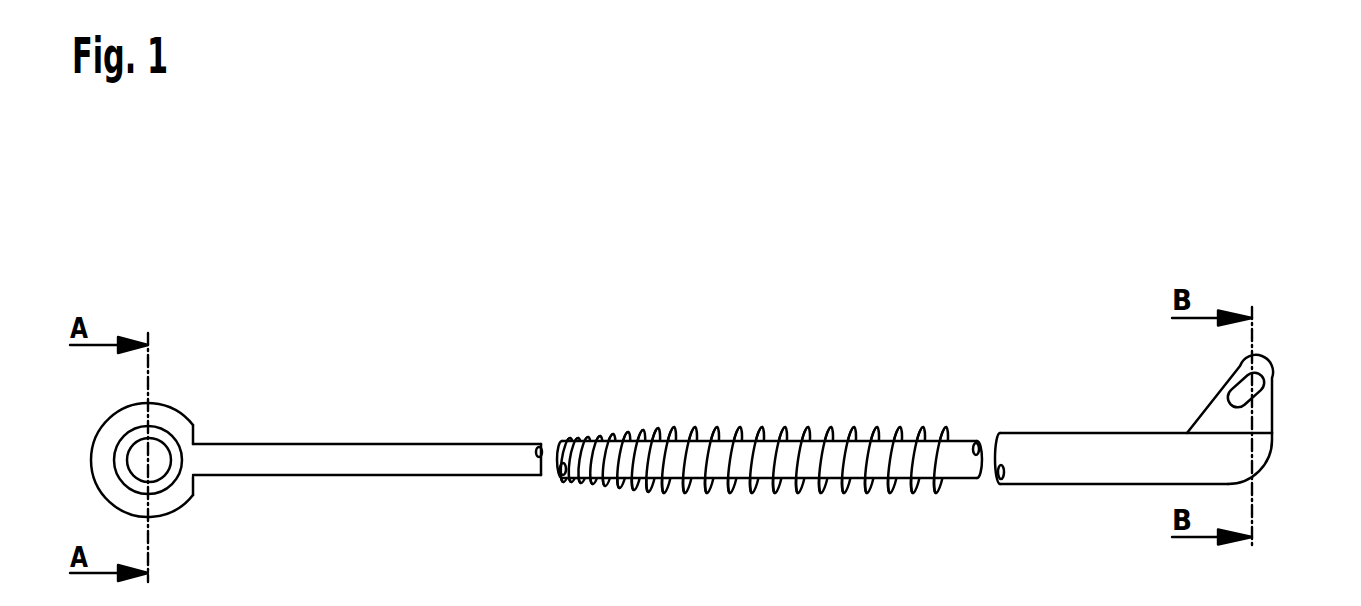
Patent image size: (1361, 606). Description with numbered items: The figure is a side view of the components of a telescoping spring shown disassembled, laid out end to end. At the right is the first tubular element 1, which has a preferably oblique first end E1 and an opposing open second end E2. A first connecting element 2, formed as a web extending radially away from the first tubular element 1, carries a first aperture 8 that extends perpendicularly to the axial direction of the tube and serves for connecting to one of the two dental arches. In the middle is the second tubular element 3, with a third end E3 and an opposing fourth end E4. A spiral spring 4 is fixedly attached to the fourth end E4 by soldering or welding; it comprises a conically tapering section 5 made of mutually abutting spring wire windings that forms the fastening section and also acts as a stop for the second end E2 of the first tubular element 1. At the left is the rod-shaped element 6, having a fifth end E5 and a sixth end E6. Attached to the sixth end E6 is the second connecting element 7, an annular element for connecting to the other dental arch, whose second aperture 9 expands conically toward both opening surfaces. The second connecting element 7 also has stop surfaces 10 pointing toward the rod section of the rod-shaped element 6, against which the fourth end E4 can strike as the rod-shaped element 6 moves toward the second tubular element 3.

The first tubular element 1 is at (1165, 431).
The first connecting element 2 is at (1217, 418).
The second tubular element 3 is at (767, 441).
The spiral spring 4 is at (700, 427).
The conically tapering section 5 is at (598, 405).
The rod-shaped element 6 is at (316, 437).
The second connecting element 7 is at (172, 420).
The first aperture 8 is at (1257, 387).
The second aperture 9 is at (160, 458).
The stop surfaces 10 is at (205, 492).
The first end E1 is at (1264, 455).
The second end E2 is at (980, 440).
The third end E3 is at (978, 474).
The fourth end E4 is at (546, 460).
The fifth end E5 is at (550, 468).
The sixth end E6 is at (218, 425).